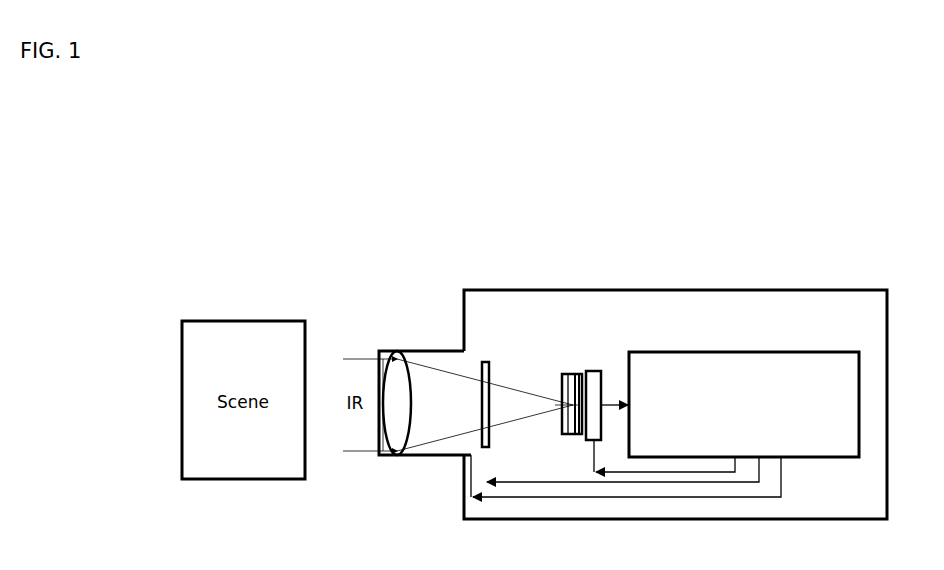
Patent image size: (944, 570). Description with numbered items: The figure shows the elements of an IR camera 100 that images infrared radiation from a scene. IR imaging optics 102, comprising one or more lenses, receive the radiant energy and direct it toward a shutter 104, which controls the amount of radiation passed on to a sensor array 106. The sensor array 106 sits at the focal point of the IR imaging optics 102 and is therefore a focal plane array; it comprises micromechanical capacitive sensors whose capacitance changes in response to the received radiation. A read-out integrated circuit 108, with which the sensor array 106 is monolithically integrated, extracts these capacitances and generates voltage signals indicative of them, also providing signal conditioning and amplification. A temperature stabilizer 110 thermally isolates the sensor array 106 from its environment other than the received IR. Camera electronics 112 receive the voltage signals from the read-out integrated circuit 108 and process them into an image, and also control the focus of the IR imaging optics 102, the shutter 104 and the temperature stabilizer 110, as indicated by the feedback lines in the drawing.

The IR camera 100 is at (361, 290).
The IR imaging optics 102 is at (400, 440).
The shutter 104 is at (484, 362).
The sensor array 106 is at (568, 377).
The read-out integrated circuit 108 is at (581, 377).
The temperature stabilizer 110 is at (594, 373).
The camera electronics 112 is at (744, 404).